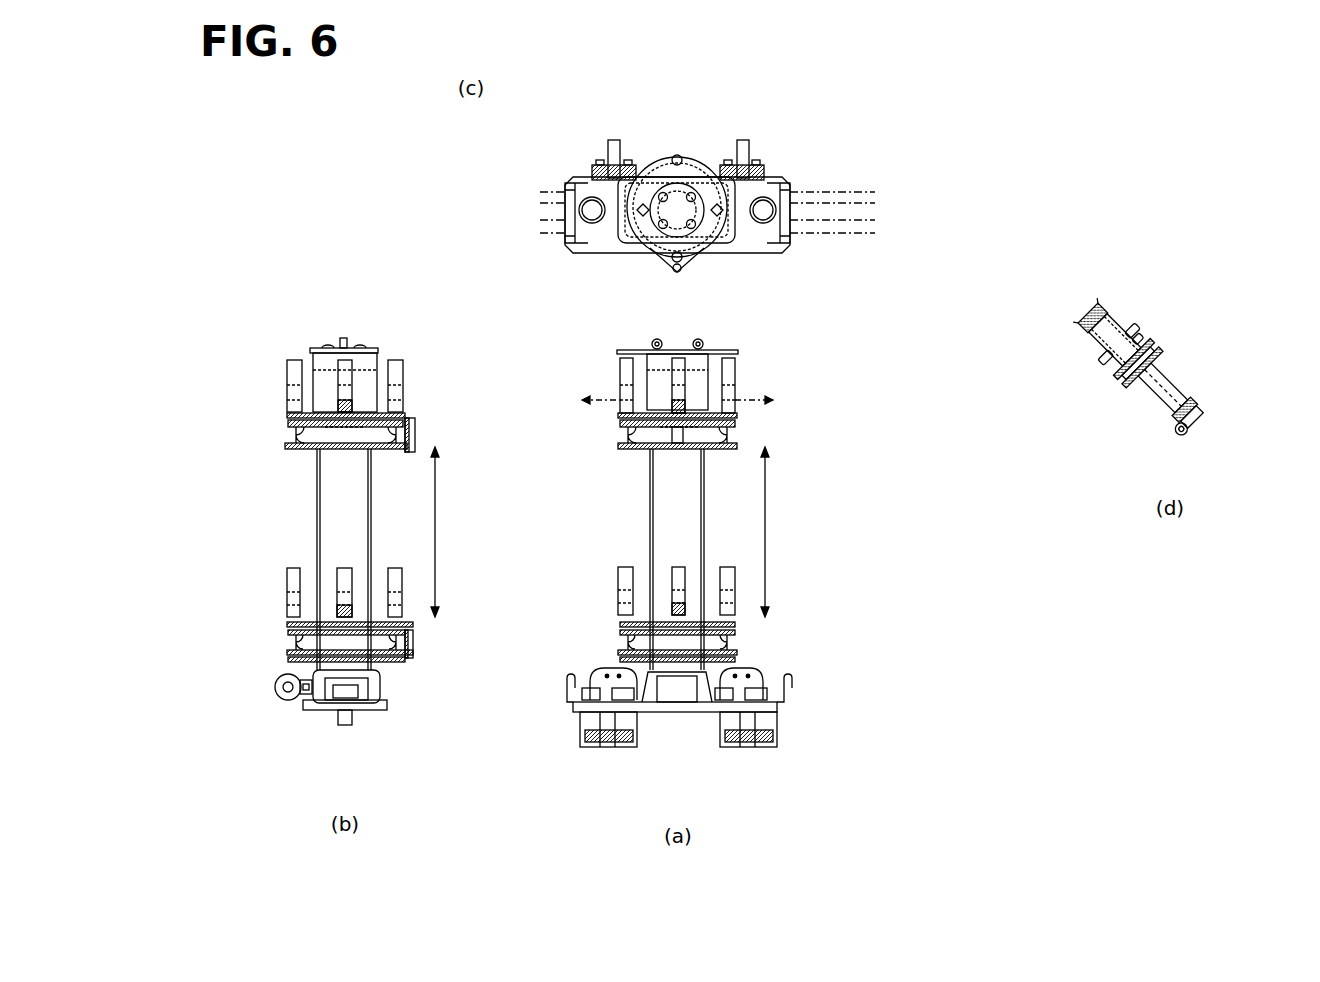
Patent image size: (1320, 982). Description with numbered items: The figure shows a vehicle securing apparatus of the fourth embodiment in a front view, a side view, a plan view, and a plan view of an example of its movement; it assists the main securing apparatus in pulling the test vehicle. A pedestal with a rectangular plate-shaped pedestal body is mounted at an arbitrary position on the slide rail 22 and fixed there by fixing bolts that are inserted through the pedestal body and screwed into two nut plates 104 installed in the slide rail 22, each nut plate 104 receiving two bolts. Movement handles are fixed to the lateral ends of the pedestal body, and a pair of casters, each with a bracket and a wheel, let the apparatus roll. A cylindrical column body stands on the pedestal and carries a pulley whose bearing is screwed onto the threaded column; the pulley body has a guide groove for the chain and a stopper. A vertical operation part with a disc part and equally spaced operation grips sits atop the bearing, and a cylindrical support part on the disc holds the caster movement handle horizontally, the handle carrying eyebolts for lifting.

The nut plate 104 is at (610, 738).
The slide rail 22 is at (550, 205).